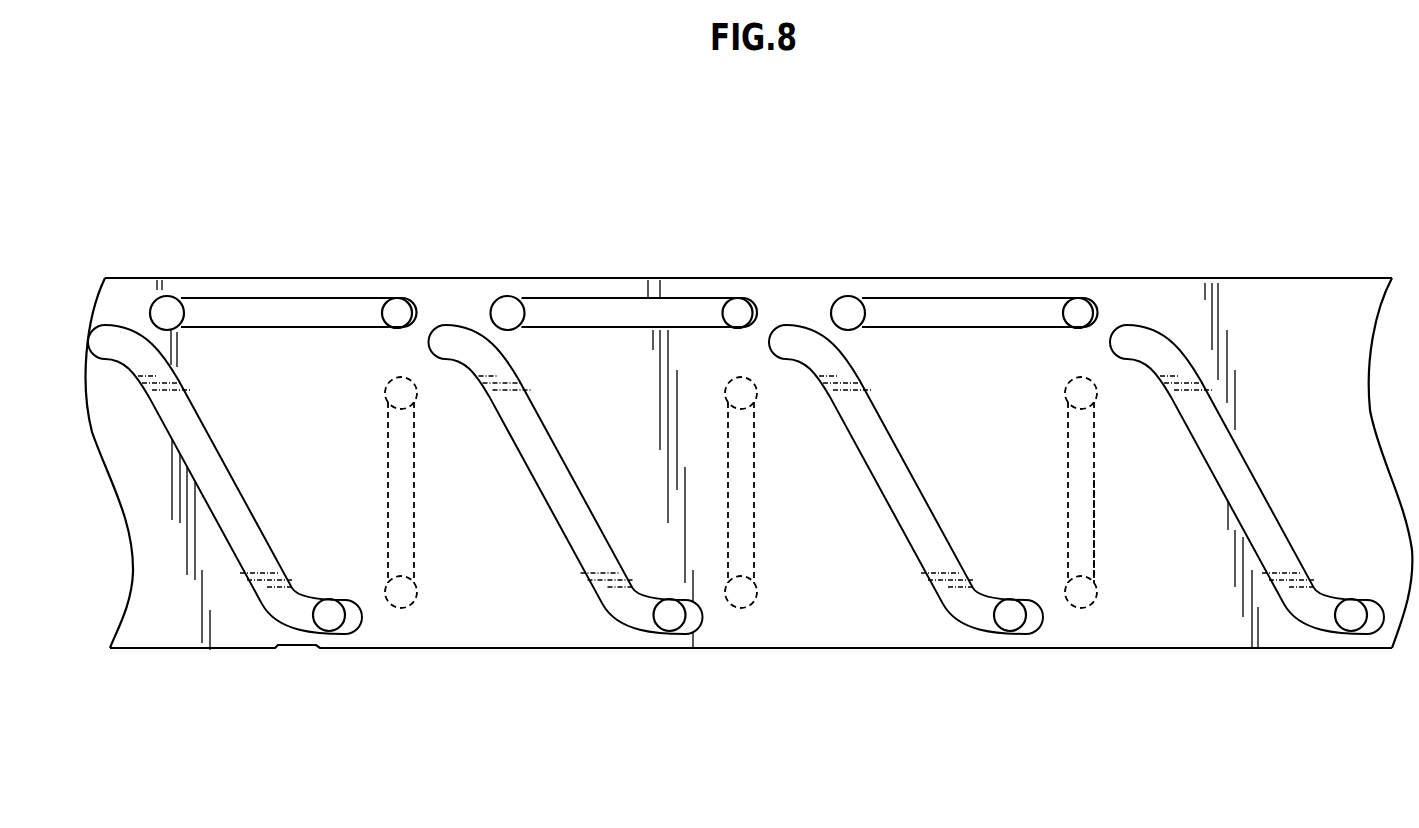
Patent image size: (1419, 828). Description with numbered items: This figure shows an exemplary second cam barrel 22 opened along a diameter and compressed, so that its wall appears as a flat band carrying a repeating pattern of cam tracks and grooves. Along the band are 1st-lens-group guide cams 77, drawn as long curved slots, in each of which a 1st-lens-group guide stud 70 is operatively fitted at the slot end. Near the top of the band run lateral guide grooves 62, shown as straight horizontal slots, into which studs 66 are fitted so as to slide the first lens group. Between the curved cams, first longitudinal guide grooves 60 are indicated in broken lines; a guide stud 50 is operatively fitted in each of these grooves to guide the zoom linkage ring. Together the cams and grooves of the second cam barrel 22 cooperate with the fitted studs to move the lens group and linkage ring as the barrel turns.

The second cam barrel 22 is at (1277, 276).
The lateral guide groove 62 is at (557, 305).
The stud 66 is at (721, 306).
The guide stud 50 is at (1068, 410).
The first longitudinal guide groove 60 is at (1096, 506).
The 1st-lens-group guide cam 77 is at (230, 542).
The 1st-lens-group guide stud 70 is at (346, 630).